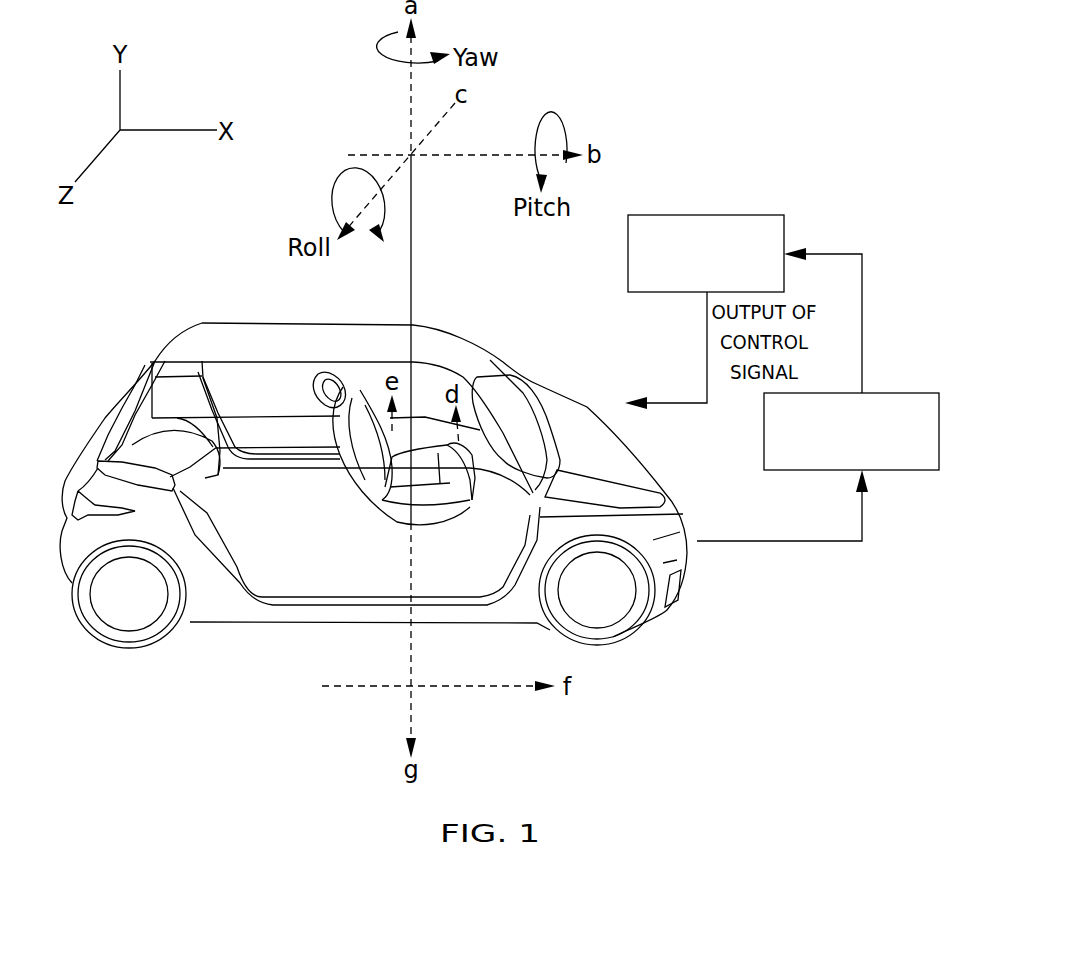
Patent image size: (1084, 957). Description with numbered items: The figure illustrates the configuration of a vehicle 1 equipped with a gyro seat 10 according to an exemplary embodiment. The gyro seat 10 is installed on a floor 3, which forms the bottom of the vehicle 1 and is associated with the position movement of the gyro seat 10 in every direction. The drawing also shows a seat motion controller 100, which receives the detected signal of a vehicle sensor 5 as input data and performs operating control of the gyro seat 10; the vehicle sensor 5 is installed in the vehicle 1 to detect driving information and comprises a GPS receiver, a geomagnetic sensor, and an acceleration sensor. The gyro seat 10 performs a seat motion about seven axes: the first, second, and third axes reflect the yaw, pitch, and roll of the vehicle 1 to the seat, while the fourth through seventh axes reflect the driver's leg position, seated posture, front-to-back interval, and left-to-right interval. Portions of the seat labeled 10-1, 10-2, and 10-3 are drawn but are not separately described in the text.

The vehicle 1 is at (592, 427).
The floor 3 is at (293, 560).
The vehicle sensor 5 is at (912, 470).
The gyro seat 10 is at (310, 357).
The seat cushion 10-1 is at (428, 458).
The seat back 10-2 is at (345, 425).
The seat side support 10-3 is at (460, 478).
The seat motion controller 100 is at (703, 214).